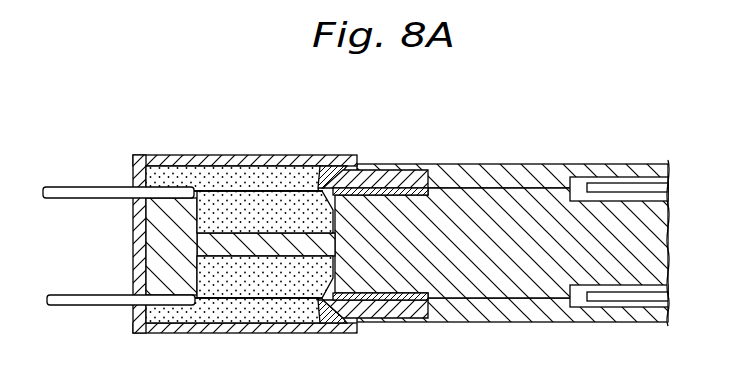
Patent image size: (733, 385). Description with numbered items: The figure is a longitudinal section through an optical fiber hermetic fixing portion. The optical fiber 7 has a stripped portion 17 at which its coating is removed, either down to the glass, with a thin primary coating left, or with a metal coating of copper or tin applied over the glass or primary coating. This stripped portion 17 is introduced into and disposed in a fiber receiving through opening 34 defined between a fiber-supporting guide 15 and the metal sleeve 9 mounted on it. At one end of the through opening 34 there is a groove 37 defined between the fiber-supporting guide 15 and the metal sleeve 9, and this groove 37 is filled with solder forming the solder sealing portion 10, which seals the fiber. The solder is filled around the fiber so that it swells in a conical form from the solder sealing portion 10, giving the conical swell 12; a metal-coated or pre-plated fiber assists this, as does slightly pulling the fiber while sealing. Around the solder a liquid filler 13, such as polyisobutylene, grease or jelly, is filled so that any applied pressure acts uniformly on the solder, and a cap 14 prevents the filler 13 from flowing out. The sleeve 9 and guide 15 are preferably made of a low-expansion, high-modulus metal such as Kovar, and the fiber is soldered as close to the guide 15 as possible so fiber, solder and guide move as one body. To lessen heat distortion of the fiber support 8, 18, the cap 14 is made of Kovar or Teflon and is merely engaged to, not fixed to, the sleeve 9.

The optical fiber 7 is at (65, 187).
The fiber support 8 is at (150, 245).
The metal sleeve 9 is at (503, 165).
The solder sealing portion 10 is at (383, 172).
The conical swell 12 is at (323, 167).
The liquid filler 13 is at (207, 168).
The cap 14 is at (143, 160).
The fiber-supporting guide 15 is at (538, 190).
The stripped portion of the optical fiber 17 is at (278, 166).
The fiber support 18 is at (253, 243).
The fiber receiving through opening 34 is at (452, 170).
The groove 37 is at (414, 176).